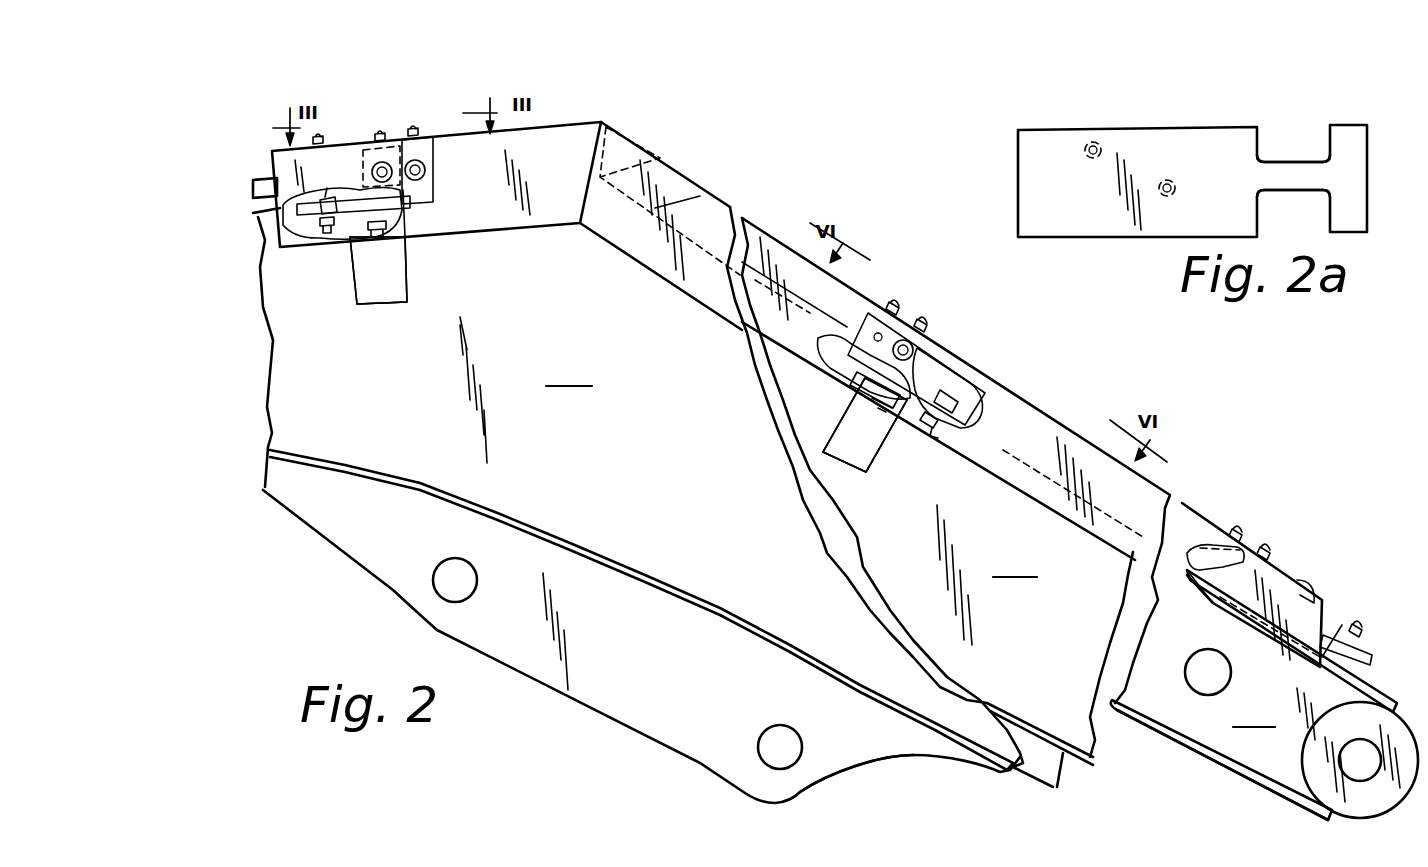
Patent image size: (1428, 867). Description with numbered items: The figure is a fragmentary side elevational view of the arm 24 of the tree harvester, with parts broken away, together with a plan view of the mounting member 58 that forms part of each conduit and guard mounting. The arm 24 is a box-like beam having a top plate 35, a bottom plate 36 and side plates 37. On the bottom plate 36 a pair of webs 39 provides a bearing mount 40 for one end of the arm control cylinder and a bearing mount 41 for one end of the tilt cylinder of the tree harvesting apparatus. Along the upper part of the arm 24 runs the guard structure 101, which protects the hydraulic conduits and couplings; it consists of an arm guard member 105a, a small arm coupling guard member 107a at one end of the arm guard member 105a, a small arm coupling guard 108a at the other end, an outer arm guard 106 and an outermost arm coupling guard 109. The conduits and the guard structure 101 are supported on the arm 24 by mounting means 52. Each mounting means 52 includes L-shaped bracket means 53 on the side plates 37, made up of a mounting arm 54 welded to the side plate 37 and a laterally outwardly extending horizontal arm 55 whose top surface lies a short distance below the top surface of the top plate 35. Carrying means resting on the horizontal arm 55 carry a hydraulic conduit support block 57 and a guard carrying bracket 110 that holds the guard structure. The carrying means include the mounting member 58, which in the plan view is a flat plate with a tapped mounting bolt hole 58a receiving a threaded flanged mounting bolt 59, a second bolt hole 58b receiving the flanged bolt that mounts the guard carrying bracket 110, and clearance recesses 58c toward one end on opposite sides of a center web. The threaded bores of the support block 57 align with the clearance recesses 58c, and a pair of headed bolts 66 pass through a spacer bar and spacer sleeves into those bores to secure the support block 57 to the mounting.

In FIG. 2, the arm 24 is at (1058, 757).
In FIG. 2, the top plate 35 is at (1377, 690).
In FIG. 2, the bottom plate 36 is at (779, 637).
In FIG. 2, the side plates 37 is at (838, 517).
In FIG. 2, the webs 39 is at (843, 774).
In FIG. 2, the bearing mount 40 is at (463, 560).
In FIG. 2, the bearing mount 41 is at (781, 727).
In FIG. 2, the mounting means 52 is at (349, 317).
In FIG. 2, the L-shaped bracket means 53 is at (377, 303).
In FIG. 2, the mounting arm 54 is at (402, 288).
In FIG. 2, the horizontal arm 55 is at (393, 213).
In FIG. 2, the hydraulic conduit support block 57 is at (338, 195).
In FIG. 2, the mounting member 58 is at (305, 237).
In FIG. 2A, the mounting member 58 is at (1018, 158).
In FIG. 2A, the mounting bolt hole 58a is at (1168, 180).
In FIG. 2A, the second bolt hole 58b is at (1088, 156).
In FIG. 2A, the clearance recesses 58c is at (1300, 143).
In FIG. 2, the flanged mounting bolt 59 is at (377, 238).
In FIG. 2, the headed bolts 66 is at (328, 235).
In FIG. 2, the guard structure 101 is at (1055, 361).
In FIG. 2, the arm guard member 105a is at (661, 160).
In FIG. 2, the outer arm guard 106 is at (1198, 507).
In FIG. 2, the arm coupling guard member 107a is at (310, 245).
In FIG. 2, the arm coupling guard 108a is at (950, 352).
In FIG. 2, the outermost arm coupling guard 109 is at (1320, 592).
In FIG. 2, the guard carrying bracket 110 is at (395, 192).